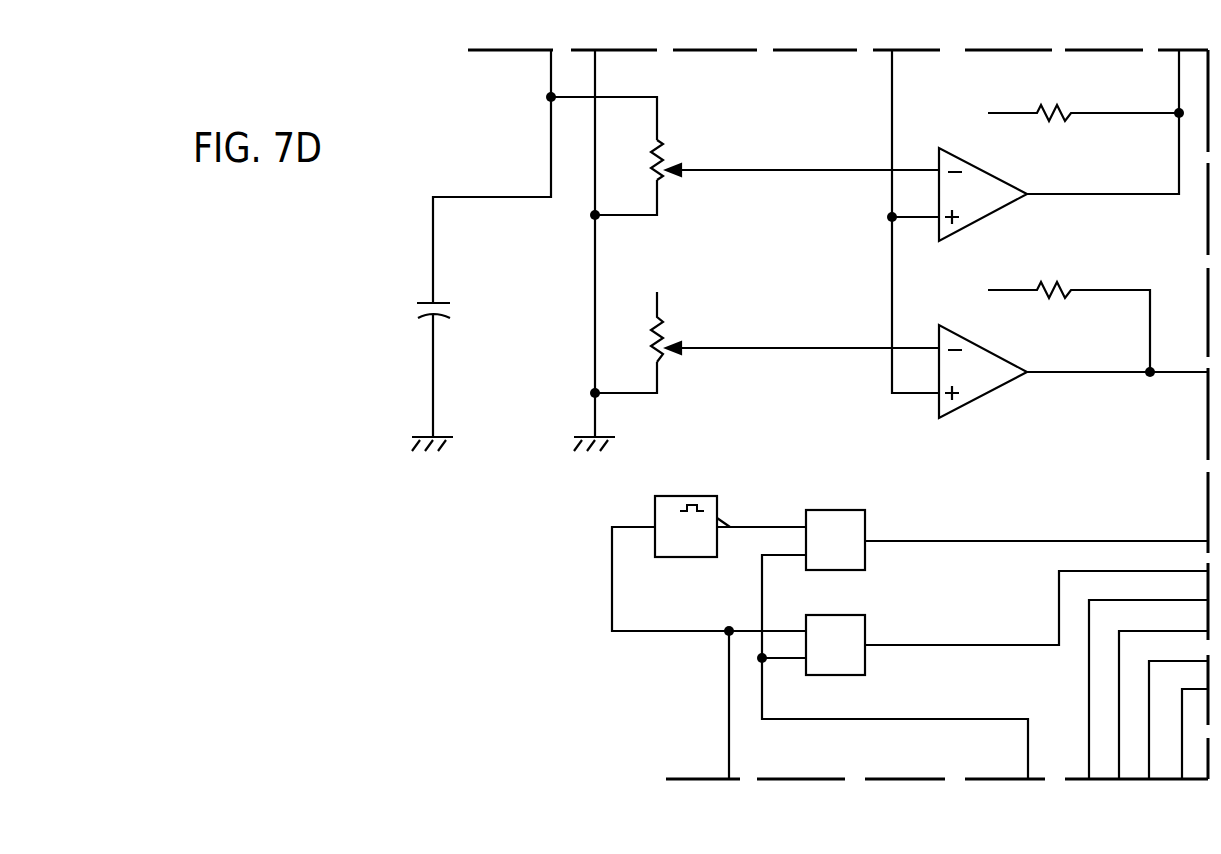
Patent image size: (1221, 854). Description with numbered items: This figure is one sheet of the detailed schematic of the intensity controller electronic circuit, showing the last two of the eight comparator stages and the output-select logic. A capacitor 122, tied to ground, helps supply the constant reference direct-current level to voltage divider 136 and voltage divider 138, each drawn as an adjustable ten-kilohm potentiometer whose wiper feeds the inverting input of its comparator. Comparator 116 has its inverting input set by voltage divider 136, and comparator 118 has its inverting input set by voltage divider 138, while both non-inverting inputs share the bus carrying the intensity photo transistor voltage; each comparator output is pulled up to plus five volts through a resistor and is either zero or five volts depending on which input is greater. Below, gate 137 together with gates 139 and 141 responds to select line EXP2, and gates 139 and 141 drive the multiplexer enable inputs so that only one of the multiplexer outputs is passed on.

The comparator 116 is at (1000, 181).
The comparator 118 is at (1003, 356).
The capacitor 122 is at (440, 304).
The voltage divider 136 is at (661, 150).
The gate 137 is at (706, 497).
The voltage divider 138 is at (661, 328).
The gate 139 is at (849, 510).
The gate 141 is at (861, 622).